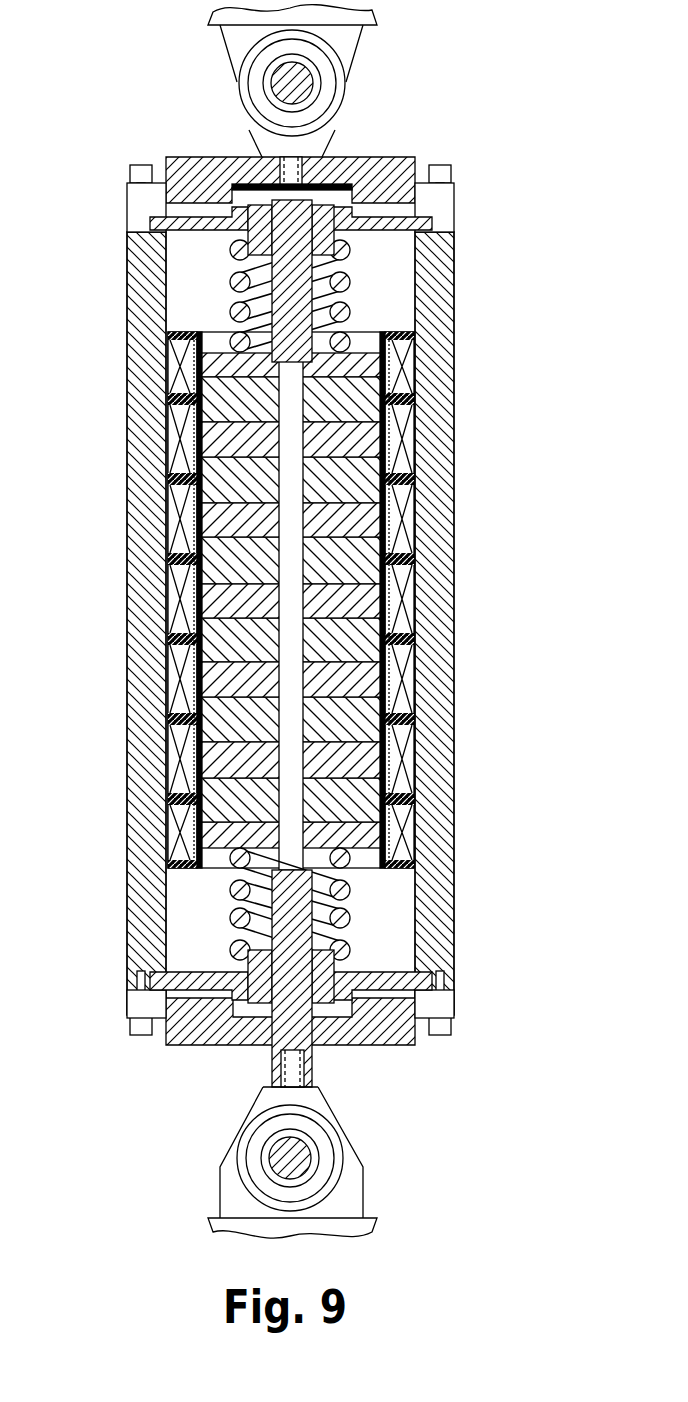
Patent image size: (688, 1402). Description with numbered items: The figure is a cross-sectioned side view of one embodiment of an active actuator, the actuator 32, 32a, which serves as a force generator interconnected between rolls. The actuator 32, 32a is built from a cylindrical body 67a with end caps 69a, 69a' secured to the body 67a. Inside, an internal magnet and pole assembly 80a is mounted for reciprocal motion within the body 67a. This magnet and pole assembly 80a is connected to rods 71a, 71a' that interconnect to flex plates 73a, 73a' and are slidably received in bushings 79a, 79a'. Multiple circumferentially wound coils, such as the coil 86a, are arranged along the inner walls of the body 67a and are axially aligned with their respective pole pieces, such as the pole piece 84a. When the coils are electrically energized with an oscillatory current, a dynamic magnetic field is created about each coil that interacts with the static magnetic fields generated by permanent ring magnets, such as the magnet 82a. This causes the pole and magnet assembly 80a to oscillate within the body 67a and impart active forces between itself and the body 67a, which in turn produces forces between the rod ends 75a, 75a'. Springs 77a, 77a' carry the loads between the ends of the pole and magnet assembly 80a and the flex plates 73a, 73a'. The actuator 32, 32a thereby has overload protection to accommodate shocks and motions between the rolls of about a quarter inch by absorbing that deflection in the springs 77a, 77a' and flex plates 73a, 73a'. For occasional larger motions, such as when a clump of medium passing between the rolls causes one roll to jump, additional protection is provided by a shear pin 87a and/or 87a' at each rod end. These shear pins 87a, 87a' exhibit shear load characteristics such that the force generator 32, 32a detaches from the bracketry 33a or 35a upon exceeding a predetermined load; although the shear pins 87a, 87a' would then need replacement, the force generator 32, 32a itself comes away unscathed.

The actuator 32 is at (452, 1046).
The actuator 32a is at (452, 1046).
The bracketry 33a is at (218, 1200).
The bracketry 35a is at (220, 33).
The cylindrical body 67a is at (457, 773).
The end cap 69a is at (276, 1045).
The end cap 69a' is at (269, 160).
The rod 71a is at (243, 997).
The rod 71a' is at (395, 281).
The flex plate 73a is at (345, 959).
The flex plate 73a' is at (338, 180).
The rod end 75a is at (334, 1152).
The rod end 75a' is at (335, 91).
The spring 77a is at (202, 296).
The spring 77a' is at (382, 904).
The bushing 79a is at (340, 1020).
The bushing 79a' is at (256, 139).
The magnet and pole assembly 80a is at (392, 547).
The permanent ring magnet 82a is at (215, 398).
The pole piece 84a is at (340, 433).
The coil 86a is at (404, 440).
The shear pin 87a is at (188, 1158).
The shear pin 87a' is at (357, 94).